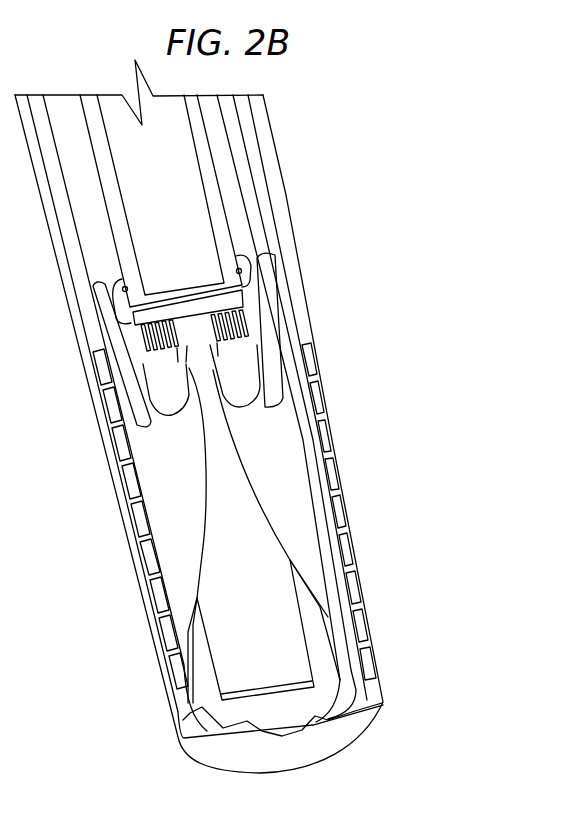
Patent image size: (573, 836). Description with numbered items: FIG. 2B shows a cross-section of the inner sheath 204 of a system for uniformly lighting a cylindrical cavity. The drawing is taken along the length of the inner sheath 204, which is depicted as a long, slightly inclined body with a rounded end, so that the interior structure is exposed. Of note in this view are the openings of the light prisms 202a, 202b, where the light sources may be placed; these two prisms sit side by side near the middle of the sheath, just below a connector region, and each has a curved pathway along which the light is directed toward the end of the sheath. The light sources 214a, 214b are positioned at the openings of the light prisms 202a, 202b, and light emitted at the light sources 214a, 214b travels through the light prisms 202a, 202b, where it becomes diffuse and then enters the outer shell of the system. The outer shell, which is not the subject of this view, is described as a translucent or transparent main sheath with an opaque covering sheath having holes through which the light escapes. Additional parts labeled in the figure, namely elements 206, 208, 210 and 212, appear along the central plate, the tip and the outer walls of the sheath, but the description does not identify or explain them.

The light prism 202a is at (287, 482).
The light prism 202b is at (160, 480).
The inner sheath 204 is at (337, 640).
The contact plate 206 is at (280, 661).
The tip 208 is at (185, 687).
The outer housing 210 is at (148, 636).
The latch strip 212 is at (128, 571).
The light source 214a is at (232, 398).
The light source 214b is at (178, 398).